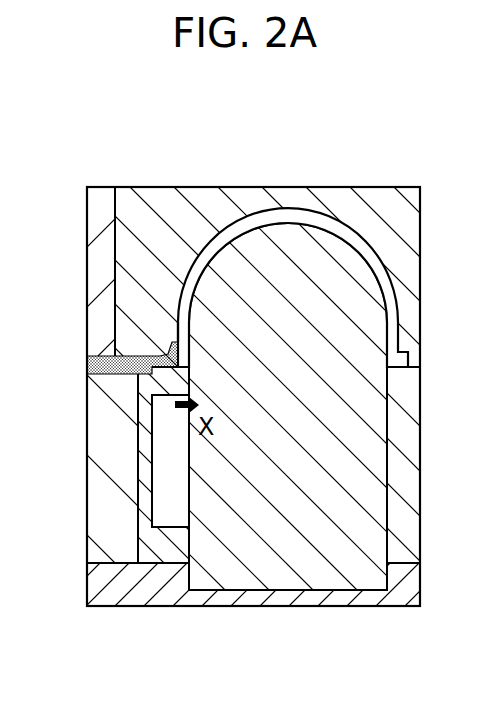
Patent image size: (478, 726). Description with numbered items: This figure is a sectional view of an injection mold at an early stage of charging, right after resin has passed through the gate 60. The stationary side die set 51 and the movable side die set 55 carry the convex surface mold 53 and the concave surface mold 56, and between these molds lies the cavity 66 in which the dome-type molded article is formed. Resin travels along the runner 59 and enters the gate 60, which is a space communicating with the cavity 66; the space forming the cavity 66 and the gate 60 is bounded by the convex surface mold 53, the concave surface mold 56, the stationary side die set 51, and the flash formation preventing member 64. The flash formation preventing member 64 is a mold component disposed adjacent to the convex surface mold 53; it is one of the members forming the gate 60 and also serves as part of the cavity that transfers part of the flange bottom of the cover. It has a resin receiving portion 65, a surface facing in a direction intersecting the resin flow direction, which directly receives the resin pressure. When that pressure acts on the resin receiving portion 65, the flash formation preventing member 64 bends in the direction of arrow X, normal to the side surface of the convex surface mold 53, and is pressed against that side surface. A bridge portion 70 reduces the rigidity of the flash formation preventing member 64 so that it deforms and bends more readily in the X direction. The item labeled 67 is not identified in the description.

The stationary side die set 51 is at (97, 503).
The convex surface mold 53 is at (293, 552).
The movable side die set 55 is at (98, 263).
The concave surface mold 56 is at (161, 203).
The runner 59 is at (88, 366).
The gate 60 is at (167, 355).
The flash formation preventing member 64 is at (162, 543).
The resin receiving portion 65 is at (156, 369).
The cavity 66 is at (293, 217).
The inner wall surface 67 is at (189, 390).
The bridge portion 70 is at (147, 437).